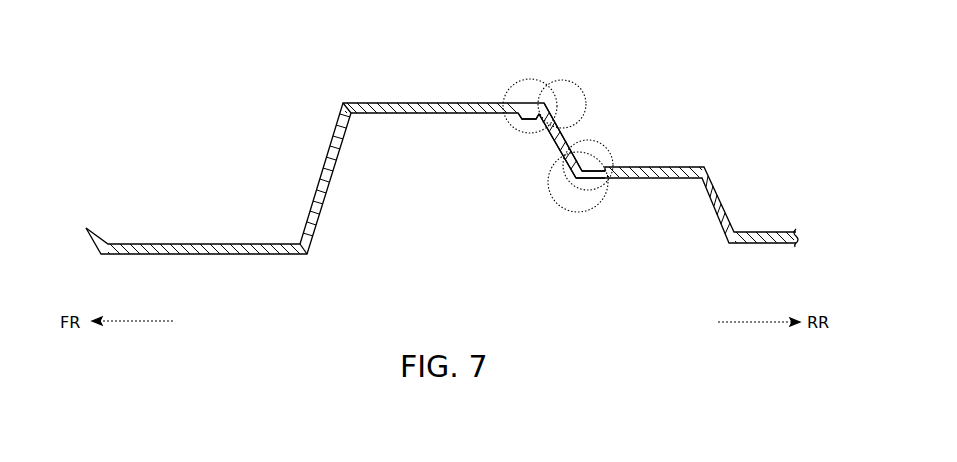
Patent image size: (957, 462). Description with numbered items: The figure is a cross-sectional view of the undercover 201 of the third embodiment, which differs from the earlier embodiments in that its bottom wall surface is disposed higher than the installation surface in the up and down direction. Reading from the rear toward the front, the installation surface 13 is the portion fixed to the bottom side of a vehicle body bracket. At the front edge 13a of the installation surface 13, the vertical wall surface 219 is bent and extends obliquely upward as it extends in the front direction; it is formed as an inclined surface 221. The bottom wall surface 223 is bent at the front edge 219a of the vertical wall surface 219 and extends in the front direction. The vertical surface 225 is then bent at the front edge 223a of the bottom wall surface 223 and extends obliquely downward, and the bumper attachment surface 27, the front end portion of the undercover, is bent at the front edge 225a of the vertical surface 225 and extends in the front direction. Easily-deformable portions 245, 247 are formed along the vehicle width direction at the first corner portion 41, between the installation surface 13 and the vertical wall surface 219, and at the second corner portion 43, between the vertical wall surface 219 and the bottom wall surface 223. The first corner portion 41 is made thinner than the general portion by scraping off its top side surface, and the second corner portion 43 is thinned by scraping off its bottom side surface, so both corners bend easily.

The undercover 201 is at (190, 170).
The bumper attachment surface 27 is at (160, 244).
The front edge of vertical surface 225a is at (300, 241).
The vertical surface 225 is at (322, 167).
The front edge of bottom wall surface 223a is at (342, 103).
The bottom wall surface 223 is at (418, 103).
The second corner portion 43 is at (528, 79).
The front edge of vertical wall surface 219a is at (562, 80).
The vertical wall surface 219 is at (622, 95).
The inclined surface 221 is at (607, 118).
The easily-deformable portion 245 is at (640, 133).
The installation surface 13 is at (680, 167).
The easily-deformable portion 247 is at (530, 133).
The front edge of installation surface 13a is at (549, 190).
The first corner portion 41 is at (578, 212).